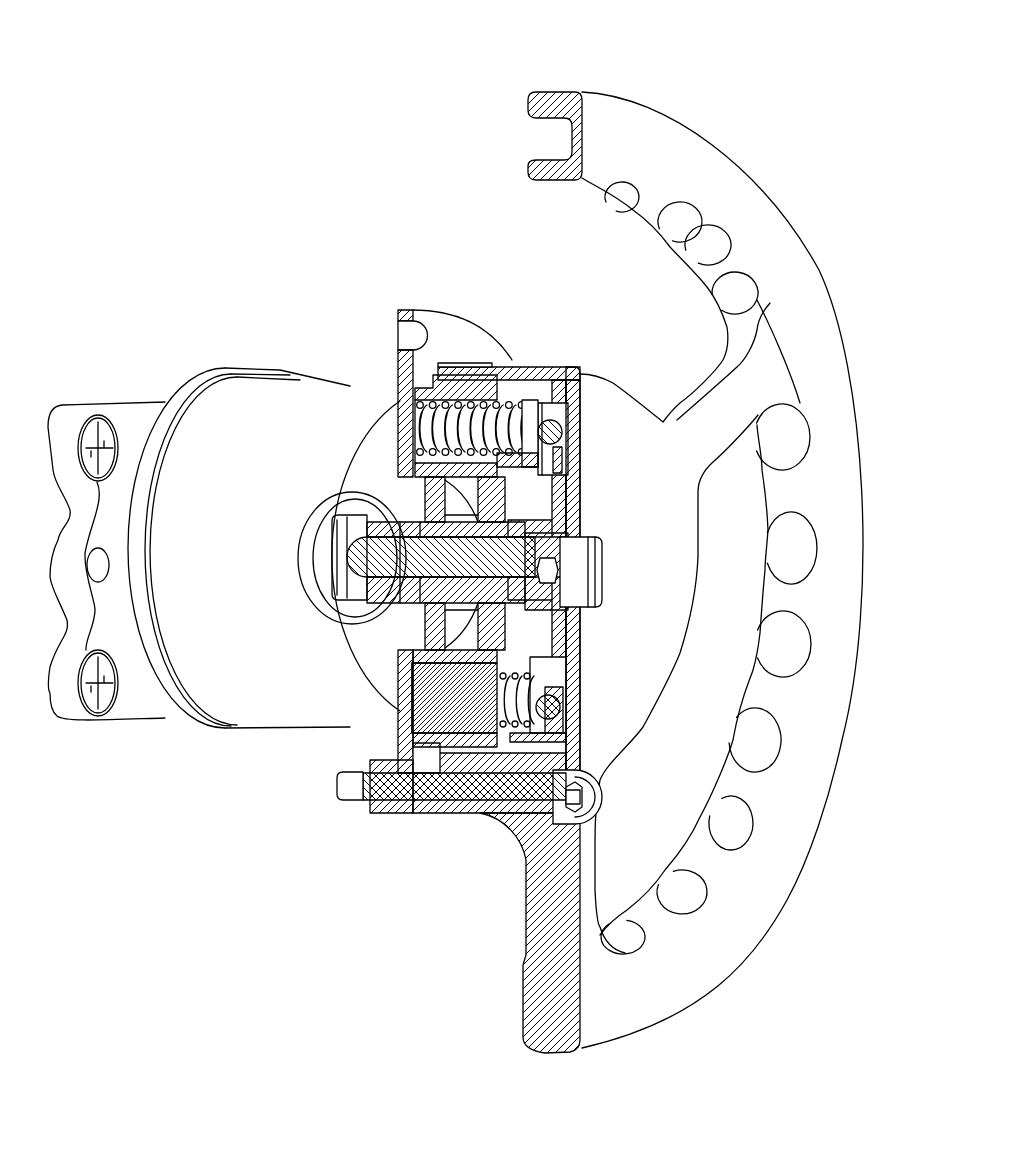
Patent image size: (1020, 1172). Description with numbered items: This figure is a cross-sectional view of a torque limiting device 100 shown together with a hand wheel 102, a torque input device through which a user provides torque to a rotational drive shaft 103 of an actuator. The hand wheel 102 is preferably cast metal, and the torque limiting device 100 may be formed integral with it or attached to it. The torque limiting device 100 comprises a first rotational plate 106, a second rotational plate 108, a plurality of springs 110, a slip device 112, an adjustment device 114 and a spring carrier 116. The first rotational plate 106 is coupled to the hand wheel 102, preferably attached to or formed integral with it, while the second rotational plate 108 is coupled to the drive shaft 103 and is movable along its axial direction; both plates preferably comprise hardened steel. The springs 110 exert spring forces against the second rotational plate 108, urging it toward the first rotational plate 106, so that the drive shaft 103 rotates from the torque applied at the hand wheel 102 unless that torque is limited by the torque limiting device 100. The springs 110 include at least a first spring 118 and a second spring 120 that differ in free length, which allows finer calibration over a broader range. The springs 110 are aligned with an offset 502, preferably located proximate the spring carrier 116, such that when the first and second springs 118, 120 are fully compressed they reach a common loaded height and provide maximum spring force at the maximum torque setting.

The torque limiting device 100 is at (100, 82).
The hand wheel 102 is at (742, 172).
The drive shaft 103 is at (390, 603).
The first rotational plate 106 is at (580, 645).
The second rotational plate 108 is at (683, 543).
The plurality of springs 110 is at (521, 400).
The slip device 112 is at (560, 707).
The adjustment device 114 is at (398, 305).
The spring carrier 116 is at (425, 468).
The first spring 118 is at (517, 726).
The second spring 120 is at (512, 400).
The offset 502 is at (538, 410).